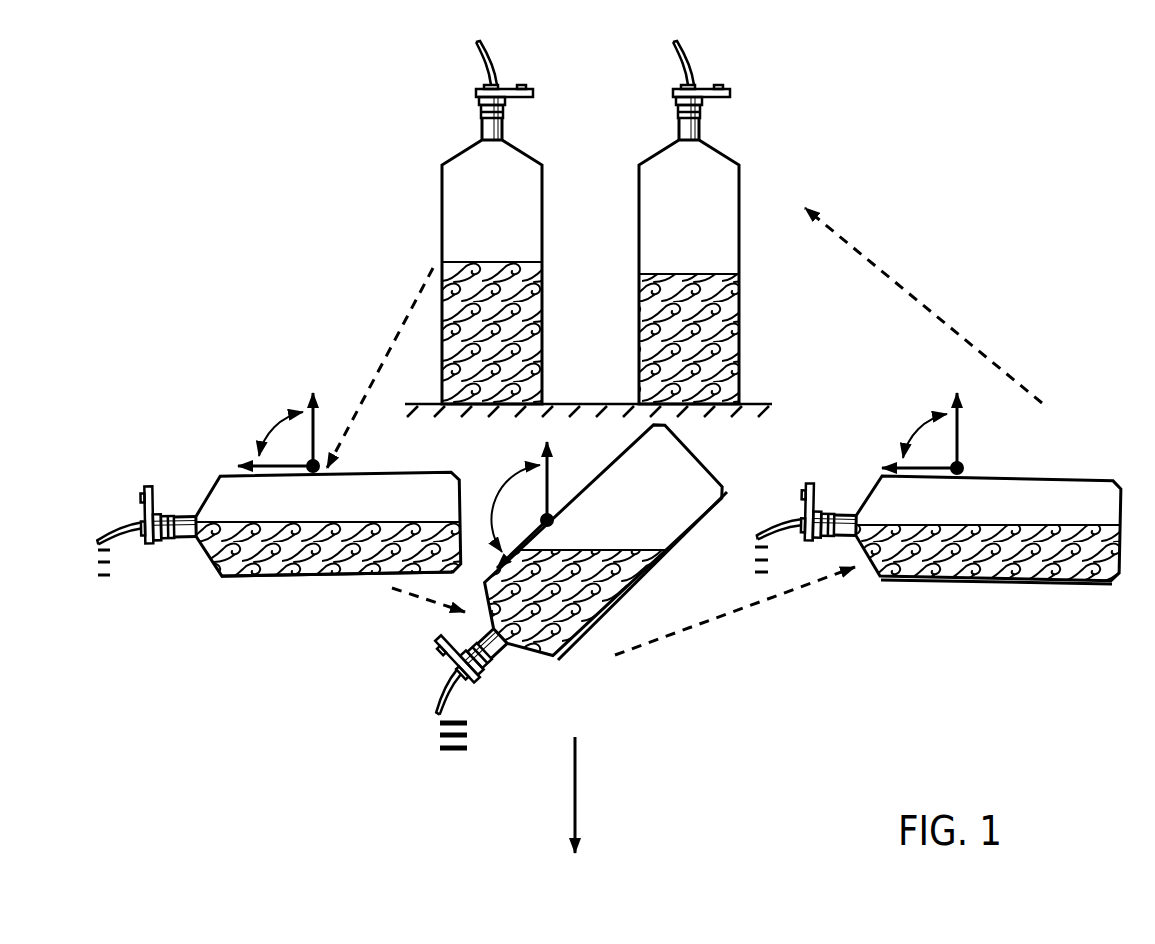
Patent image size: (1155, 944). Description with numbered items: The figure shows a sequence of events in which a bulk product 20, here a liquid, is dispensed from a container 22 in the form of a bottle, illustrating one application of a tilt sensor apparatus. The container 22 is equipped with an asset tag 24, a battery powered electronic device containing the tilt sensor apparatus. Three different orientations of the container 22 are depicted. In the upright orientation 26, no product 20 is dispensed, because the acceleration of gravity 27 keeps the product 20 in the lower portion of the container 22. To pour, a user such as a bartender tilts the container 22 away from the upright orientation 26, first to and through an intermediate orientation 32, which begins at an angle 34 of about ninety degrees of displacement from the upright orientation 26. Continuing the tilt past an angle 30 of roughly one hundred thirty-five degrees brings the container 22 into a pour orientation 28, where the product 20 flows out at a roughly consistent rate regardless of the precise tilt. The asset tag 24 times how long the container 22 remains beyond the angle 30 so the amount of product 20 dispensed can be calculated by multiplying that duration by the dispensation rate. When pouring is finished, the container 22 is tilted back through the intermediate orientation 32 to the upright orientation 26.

The bulk product 20 is at (518, 262).
The container 22 is at (442, 168).
The asset tag 24 is at (509, 89).
The upright orientation 26 is at (509, 147).
The acceleration of gravity 27 is at (576, 770).
The pour orientation 28 is at (647, 568).
The angle 30 is at (508, 470).
The intermediate orientation 32 is at (288, 577).
The angle 34 is at (270, 428).